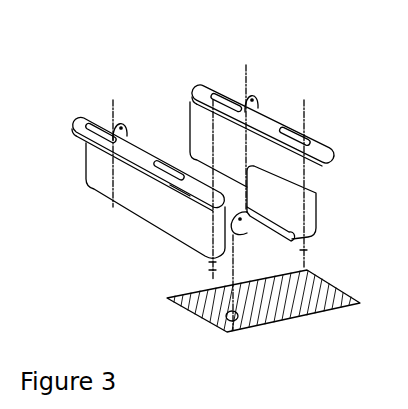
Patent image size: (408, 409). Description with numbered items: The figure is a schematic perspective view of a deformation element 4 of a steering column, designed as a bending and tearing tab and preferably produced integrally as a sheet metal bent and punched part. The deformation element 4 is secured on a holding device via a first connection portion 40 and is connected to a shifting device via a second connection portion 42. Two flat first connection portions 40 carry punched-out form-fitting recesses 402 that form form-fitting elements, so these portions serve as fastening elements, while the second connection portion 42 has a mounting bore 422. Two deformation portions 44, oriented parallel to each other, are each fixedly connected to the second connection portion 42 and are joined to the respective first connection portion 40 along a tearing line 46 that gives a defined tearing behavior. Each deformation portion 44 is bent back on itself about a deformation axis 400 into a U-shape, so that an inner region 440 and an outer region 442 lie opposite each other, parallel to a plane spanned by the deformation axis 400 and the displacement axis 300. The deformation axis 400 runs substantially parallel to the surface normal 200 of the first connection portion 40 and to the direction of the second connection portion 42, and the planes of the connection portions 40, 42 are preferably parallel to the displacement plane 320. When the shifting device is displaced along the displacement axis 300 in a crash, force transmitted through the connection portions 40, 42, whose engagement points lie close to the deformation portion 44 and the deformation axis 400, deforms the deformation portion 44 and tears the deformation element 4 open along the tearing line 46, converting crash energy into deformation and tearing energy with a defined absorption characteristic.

The deformation element 4 is at (134, 63).
The first connection portion 40 is at (274, 125).
The second connection portion 42 is at (297, 242).
The deformation portion 44 is at (300, 213).
The tearing line 46 is at (318, 178).
The surface normal 200 is at (113, 100).
The displacement axis 300 is at (305, 270).
The displacement plane 320 is at (222, 332).
The deformation axis 400 is at (212, 268).
The form-fitting recess 402 is at (316, 135).
The mounting bore 422 is at (253, 228).
The inner region 440 is at (251, 102).
The outer region 442 is at (78, 142).